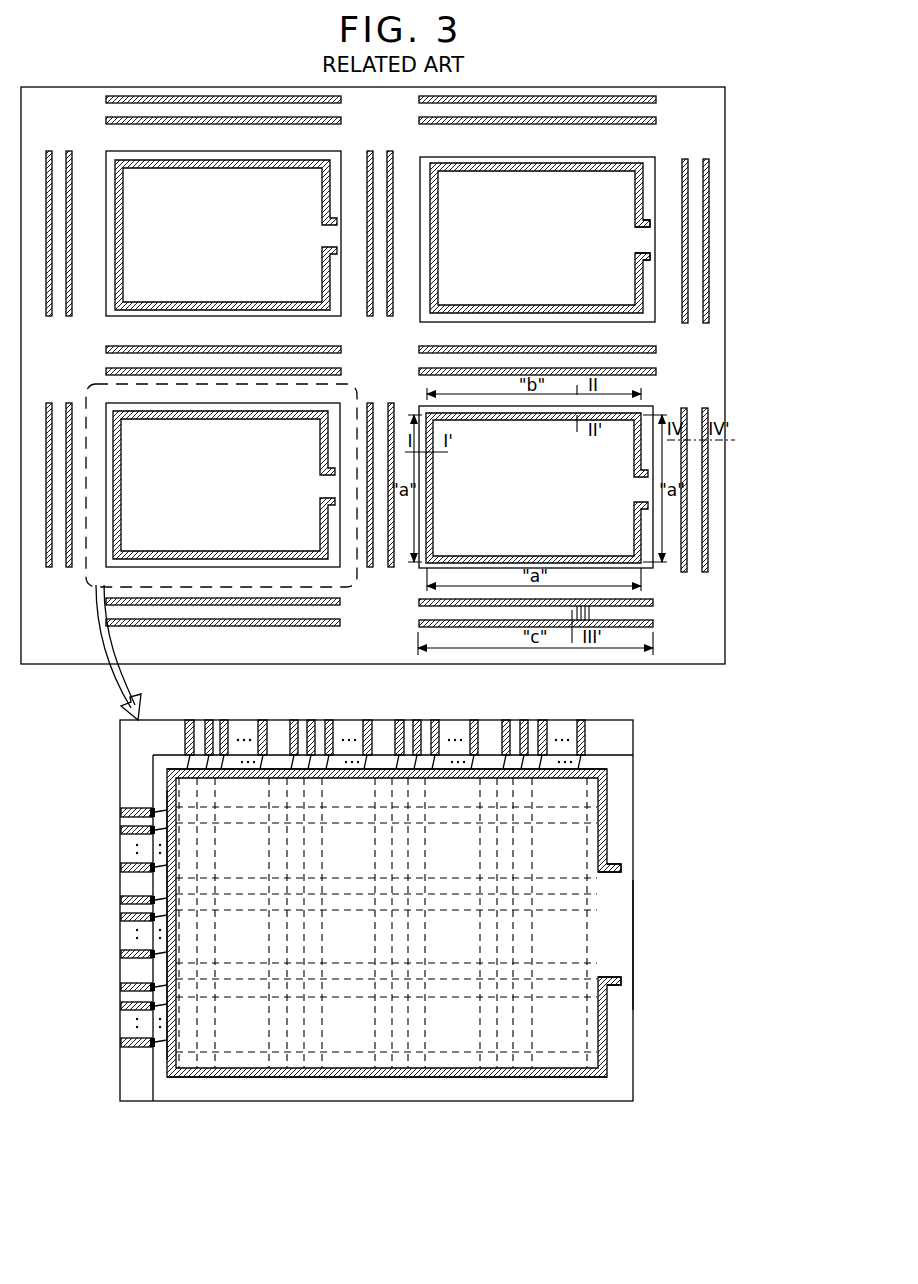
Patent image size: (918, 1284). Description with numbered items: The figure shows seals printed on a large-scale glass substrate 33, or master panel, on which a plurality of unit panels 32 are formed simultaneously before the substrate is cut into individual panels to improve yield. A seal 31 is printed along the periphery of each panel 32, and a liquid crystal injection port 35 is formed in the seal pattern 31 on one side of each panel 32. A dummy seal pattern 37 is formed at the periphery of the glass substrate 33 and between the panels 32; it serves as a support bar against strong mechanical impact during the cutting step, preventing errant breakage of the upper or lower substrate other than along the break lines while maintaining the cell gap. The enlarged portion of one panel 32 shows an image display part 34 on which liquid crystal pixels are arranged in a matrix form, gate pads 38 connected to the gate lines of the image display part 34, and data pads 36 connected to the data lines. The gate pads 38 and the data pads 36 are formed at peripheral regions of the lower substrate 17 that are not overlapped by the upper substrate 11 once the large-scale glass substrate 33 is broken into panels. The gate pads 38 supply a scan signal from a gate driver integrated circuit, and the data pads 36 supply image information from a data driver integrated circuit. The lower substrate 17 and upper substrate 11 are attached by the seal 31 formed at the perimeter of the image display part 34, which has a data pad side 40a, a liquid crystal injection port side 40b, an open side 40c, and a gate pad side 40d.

The upper substrate 11 is at (640, 857).
The lower substrate 17 is at (637, 729).
The seal 31 is at (600, 165).
The panel 32 is at (662, 300).
The large-scale glass substrate 33 is at (717, 173).
The image display part 34 is at (362, 857).
The liquid crystal injection port 35 is at (643, 242).
The data pads 36 is at (582, 716).
The dummy seal pattern 37 is at (656, 101).
The gate pads 38 is at (112, 806).
The data pad side 40a is at (428, 770).
The liquid crystal injection port side 40b is at (633, 945).
The open side 40c is at (405, 1078).
The gate pad side 40d is at (167, 947).